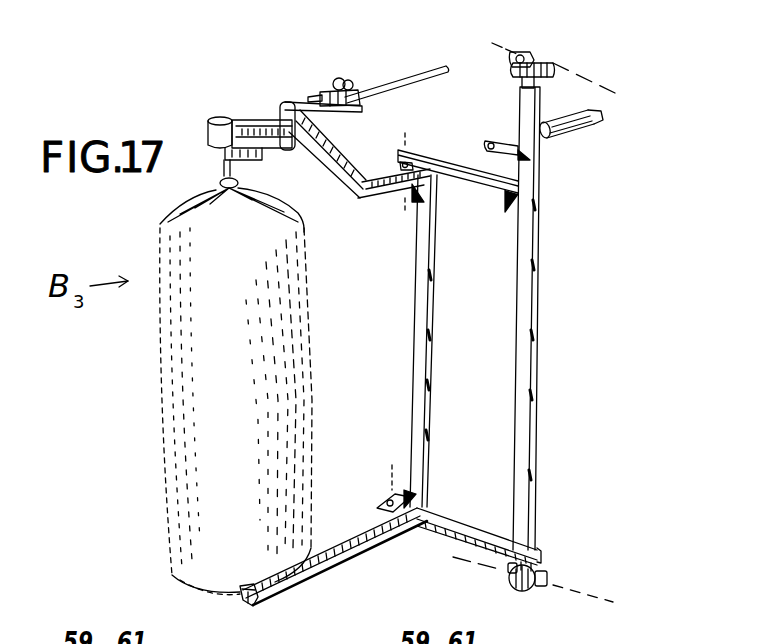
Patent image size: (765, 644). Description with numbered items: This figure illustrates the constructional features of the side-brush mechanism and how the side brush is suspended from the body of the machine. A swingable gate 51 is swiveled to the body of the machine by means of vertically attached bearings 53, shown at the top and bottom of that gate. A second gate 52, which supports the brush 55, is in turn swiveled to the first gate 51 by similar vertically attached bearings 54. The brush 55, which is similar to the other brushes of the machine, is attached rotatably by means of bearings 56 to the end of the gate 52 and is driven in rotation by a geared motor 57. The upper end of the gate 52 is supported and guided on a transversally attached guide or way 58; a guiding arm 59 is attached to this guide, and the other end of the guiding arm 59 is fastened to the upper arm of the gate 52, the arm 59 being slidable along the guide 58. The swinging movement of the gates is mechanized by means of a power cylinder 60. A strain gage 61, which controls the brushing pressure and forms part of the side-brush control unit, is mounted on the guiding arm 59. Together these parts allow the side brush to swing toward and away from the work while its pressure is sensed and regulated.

The swingable gate 51 is at (523, 308).
The gate 52 is at (418, 310).
The bearings 53 is at (530, 54).
The bearings 54 is at (397, 160).
The brush 55 is at (188, 364).
The bearings 56 is at (244, 599).
The geared motor 57 is at (241, 117).
The guide 58 is at (393, 80).
The guiding arm 59 is at (276, 118).
The power cylinder 60 is at (595, 124).
The strain gage 61 is at (308, 97).